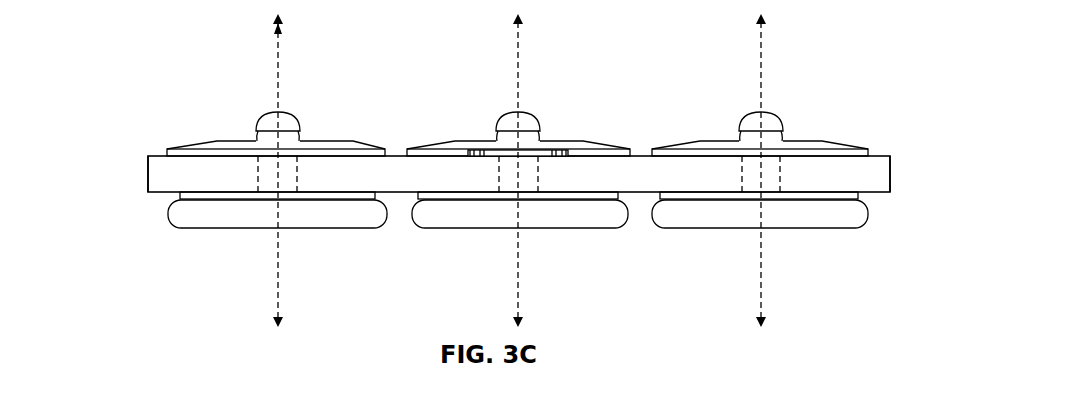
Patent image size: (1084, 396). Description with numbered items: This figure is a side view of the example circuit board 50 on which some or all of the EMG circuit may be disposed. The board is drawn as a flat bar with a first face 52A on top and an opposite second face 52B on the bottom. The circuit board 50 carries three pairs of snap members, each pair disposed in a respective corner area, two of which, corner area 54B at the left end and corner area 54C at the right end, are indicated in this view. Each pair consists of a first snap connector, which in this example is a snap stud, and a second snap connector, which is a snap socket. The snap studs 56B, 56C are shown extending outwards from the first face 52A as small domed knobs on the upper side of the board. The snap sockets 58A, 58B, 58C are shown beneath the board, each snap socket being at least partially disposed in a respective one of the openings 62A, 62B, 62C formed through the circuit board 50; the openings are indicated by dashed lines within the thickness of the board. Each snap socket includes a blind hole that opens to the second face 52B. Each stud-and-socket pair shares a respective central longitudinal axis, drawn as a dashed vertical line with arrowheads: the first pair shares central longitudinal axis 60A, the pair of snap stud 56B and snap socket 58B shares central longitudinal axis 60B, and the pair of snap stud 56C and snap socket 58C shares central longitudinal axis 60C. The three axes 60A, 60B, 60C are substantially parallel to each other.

The circuit board 50 is at (376, 157).
The first face 52A is at (158, 148).
The second face 52B is at (399, 218).
The corner area 54B is at (146, 183).
The corner area 54C is at (892, 173).
The snap stud 56B is at (268, 120).
The snap stud 56C is at (752, 120).
The snap socket 58A is at (472, 218).
The snap socket 58B is at (206, 218).
The snap socket 58C is at (693, 220).
The central longitudinal axis 60A is at (518, 57).
The central longitudinal axis 60B is at (278, 57).
The central longitudinal axis 60C is at (761, 58).
The opening 62A is at (544, 177).
The opening 62B is at (300, 178).
The opening 62C is at (784, 177).